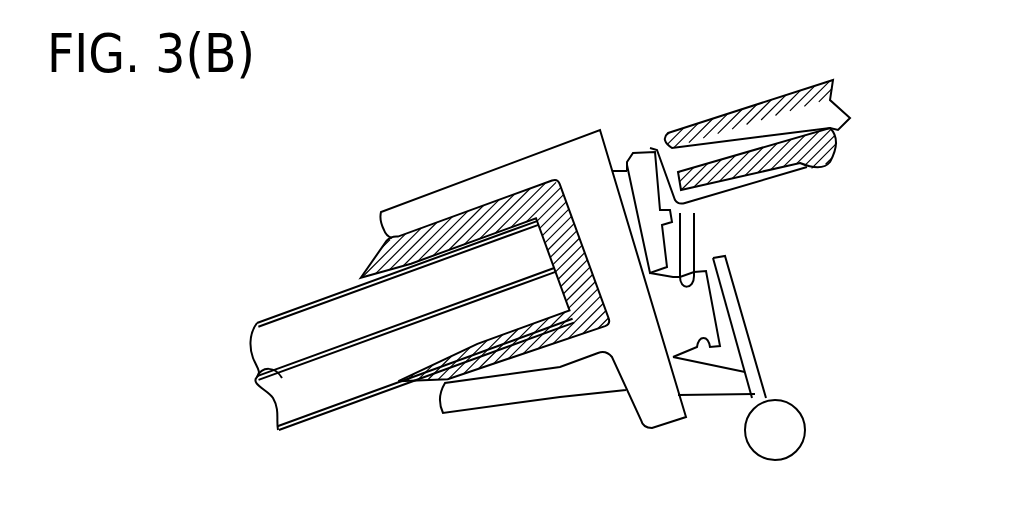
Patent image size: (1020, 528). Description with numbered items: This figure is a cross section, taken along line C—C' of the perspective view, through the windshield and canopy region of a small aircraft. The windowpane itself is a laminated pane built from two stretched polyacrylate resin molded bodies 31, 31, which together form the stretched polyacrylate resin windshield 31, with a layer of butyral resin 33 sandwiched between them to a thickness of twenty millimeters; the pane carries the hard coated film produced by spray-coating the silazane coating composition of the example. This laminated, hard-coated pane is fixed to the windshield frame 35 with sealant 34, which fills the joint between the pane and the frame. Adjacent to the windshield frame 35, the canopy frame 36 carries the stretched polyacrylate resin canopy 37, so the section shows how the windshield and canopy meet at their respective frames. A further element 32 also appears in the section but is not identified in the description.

The stretched polyacrylate resin windshield 31 is at (357, 377).
The tube upper wall 32 is at (275, 318).
The butyral resin 33 is at (258, 368).
The sealant 34 is at (392, 247).
The windshield frame 35 is at (633, 367).
The canopy frame 36 is at (727, 193).
The stretched polyacrylate resin canopy 37 is at (805, 122).